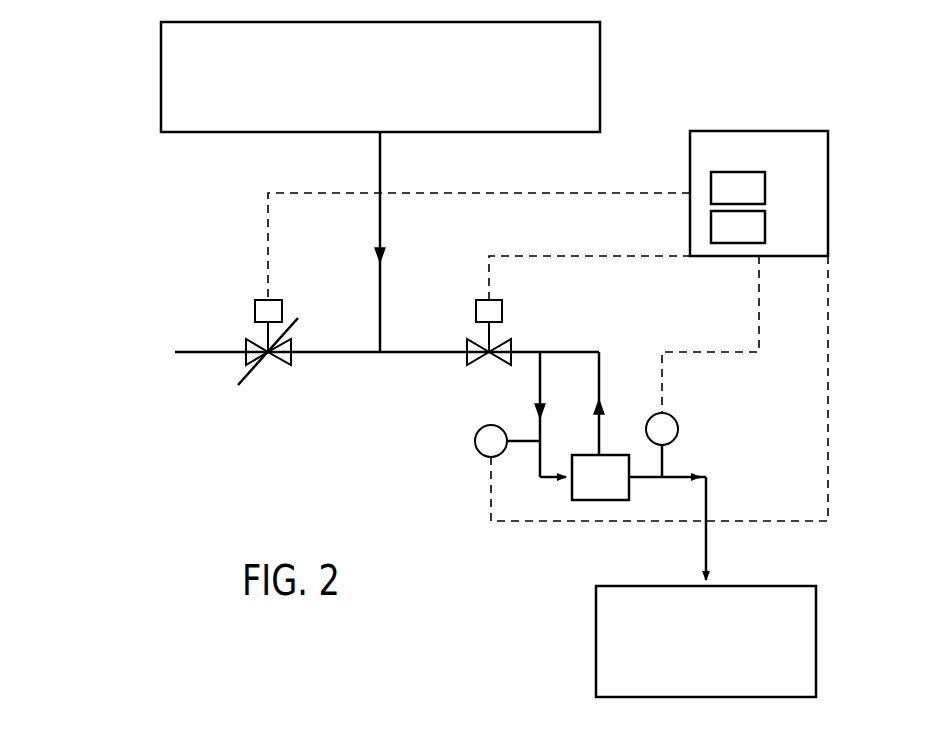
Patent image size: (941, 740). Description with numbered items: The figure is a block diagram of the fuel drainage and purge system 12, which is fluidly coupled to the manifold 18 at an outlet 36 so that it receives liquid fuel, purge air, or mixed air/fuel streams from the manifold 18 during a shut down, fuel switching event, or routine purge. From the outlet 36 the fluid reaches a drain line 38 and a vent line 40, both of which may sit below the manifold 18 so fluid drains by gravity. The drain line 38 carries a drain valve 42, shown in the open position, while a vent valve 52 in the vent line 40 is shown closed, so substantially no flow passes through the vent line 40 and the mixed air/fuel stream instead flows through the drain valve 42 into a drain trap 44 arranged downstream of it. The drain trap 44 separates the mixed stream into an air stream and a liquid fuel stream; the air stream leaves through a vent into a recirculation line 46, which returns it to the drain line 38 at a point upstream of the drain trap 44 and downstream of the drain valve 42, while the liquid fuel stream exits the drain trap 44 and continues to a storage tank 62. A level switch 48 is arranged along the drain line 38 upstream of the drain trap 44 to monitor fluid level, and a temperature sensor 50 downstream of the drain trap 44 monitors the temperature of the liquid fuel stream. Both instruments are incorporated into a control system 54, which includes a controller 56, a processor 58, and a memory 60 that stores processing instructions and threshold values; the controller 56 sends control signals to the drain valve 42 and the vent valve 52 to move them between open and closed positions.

The fuel drainage and purge system 12 is at (118, 214).
The manifold 18 is at (600, 72).
The outlet 36 is at (382, 136).
The drain line 38 is at (426, 350).
The vent line 40 is at (337, 350).
The drain valve 42 is at (511, 342).
The drain trap 44 is at (600, 500).
The recirculation line 46 is at (600, 350).
The level switch 48 is at (478, 452).
The temperature sensor 50 is at (678, 425).
The vent valve 52 is at (291, 363).
The control system 54 is at (852, 102).
The controller 56 is at (828, 171).
The processor 58 is at (765, 188).
The memory 60 is at (765, 228).
The storage tank 62 is at (816, 640).